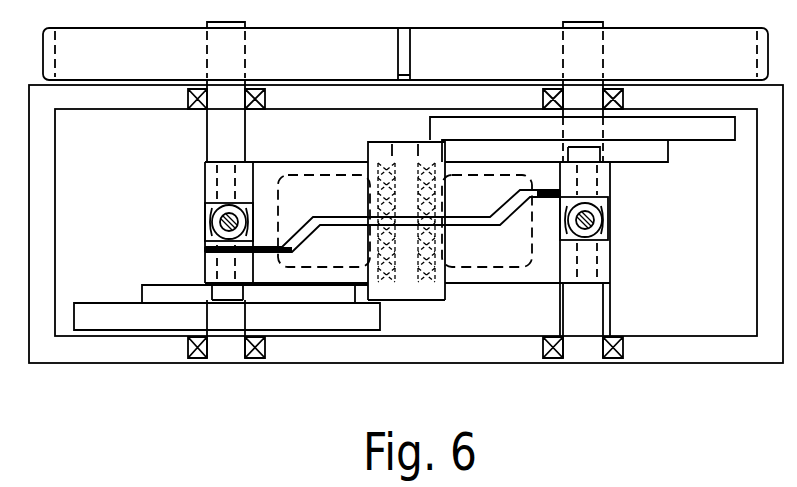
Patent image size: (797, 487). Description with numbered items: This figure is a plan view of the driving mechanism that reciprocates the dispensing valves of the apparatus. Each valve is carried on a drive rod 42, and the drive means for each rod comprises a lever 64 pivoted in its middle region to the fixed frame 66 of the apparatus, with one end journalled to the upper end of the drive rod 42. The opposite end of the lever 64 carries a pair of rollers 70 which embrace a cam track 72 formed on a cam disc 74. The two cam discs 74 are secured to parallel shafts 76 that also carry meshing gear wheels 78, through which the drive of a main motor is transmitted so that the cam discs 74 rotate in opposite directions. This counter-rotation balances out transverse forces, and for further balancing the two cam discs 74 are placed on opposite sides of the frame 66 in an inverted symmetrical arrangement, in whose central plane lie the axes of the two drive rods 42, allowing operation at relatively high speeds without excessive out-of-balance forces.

The drive rod 42 is at (205, 220).
The lever 64 is at (313, 165).
The fixed frame 66 is at (636, 348).
The rollers 70 is at (226, 292).
The cam track 72 is at (508, 147).
The cam disc 74 is at (660, 130).
The parallel shafts 76 is at (213, 134).
The gear wheels 78 is at (340, 100).